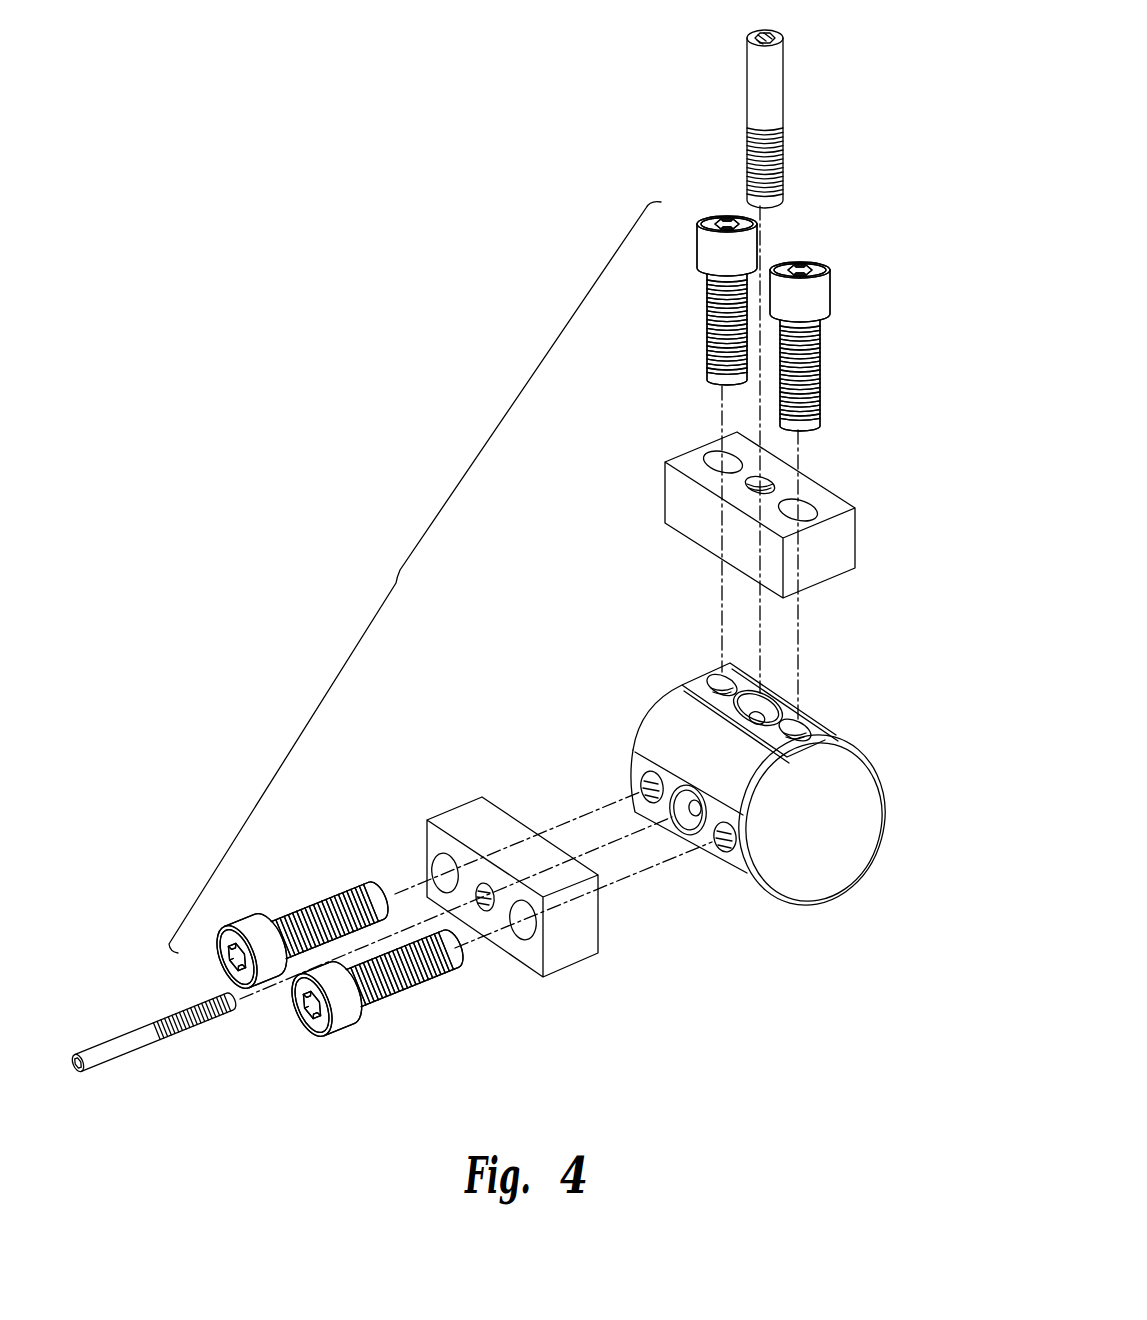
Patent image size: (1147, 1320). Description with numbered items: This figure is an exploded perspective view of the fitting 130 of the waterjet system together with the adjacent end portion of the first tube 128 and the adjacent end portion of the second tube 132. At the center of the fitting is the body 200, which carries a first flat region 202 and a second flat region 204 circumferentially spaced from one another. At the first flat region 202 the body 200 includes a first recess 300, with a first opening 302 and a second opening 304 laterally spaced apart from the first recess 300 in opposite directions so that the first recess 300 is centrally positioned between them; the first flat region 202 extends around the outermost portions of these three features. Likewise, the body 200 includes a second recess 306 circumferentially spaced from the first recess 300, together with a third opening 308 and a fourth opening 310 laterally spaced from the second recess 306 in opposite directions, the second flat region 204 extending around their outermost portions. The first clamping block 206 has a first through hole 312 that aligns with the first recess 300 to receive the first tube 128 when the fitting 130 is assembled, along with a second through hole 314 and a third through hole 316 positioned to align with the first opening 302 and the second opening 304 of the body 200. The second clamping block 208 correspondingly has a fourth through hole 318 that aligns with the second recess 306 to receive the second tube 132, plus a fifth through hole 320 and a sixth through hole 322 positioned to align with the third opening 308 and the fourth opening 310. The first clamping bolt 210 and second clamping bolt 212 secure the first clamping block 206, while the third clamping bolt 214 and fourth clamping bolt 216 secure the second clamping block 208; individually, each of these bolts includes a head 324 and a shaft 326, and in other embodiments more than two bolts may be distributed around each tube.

The first tube 128 is at (745, 157).
The fitting 130 is at (398, 573).
The second tube 132 is at (178, 1052).
The body 200 is at (754, 789).
The first flat region 202 is at (724, 789).
The second flat region 204 is at (740, 863).
The first clamping block 206 is at (791, 507).
The second clamping block 208 is at (547, 909).
The first clamping bolt 210 is at (773, 248).
The second clamping bolt 212 is at (878, 278).
The third clamping bolt 214 is at (257, 1003).
The fourth clamping bolt 216 is at (300, 1052).
The first recess 300 is at (760, 702).
The first opening 302 is at (718, 681).
The second opening 304 is at (805, 726).
The second recess 306 is at (683, 821).
The third opening 308 is at (638, 789).
The fourth opening 310 is at (718, 850).
The first through hole 312 is at (770, 480).
The second through hole 314 is at (715, 458).
The third through hole 316 is at (808, 503).
The fourth through hole 318 is at (480, 908).
The fifth through hole 320 is at (437, 870).
The sixth through hole 322 is at (520, 938).
The head 324 is at (703, 253).
The shaft 326 is at (707, 330).